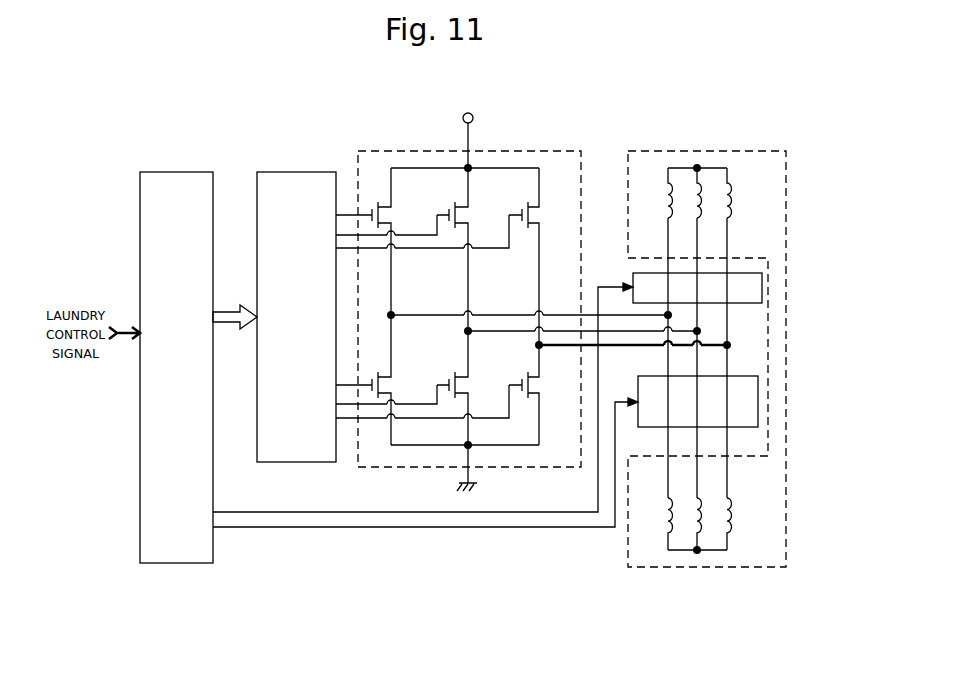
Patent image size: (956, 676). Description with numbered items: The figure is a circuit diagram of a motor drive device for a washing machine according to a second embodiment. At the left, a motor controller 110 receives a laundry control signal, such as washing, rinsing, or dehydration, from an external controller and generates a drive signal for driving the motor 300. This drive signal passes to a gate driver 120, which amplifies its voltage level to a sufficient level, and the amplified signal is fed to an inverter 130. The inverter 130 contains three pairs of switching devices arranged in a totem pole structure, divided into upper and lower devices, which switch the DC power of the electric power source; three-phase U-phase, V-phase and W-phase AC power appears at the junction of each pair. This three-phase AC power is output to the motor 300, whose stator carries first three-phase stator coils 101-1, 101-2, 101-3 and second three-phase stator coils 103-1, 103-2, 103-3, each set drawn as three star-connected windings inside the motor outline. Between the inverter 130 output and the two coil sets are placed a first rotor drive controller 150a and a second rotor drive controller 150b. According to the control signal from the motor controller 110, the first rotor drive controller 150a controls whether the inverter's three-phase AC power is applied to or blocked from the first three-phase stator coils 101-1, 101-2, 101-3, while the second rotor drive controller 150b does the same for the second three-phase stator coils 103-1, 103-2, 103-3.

The motor controller 110 is at (176, 565).
The gate driver 120 is at (298, 171).
The inverter 130 is at (401, 150).
The motor 300 is at (683, 352).
The first three-phase stator coil 101-1 is at (663, 192).
The first three-phase stator coil 101-2 is at (692, 187).
The first three-phase stator coil 101-3 is at (722, 187).
The second three-phase stator coil 103-1 is at (663, 522).
The second three-phase stator coil 103-2 is at (692, 528).
The second three-phase stator coil 103-3 is at (721, 528).
The first rotor drive controller 150a is at (762, 287).
The second rotor drive controller 150b is at (755, 376).